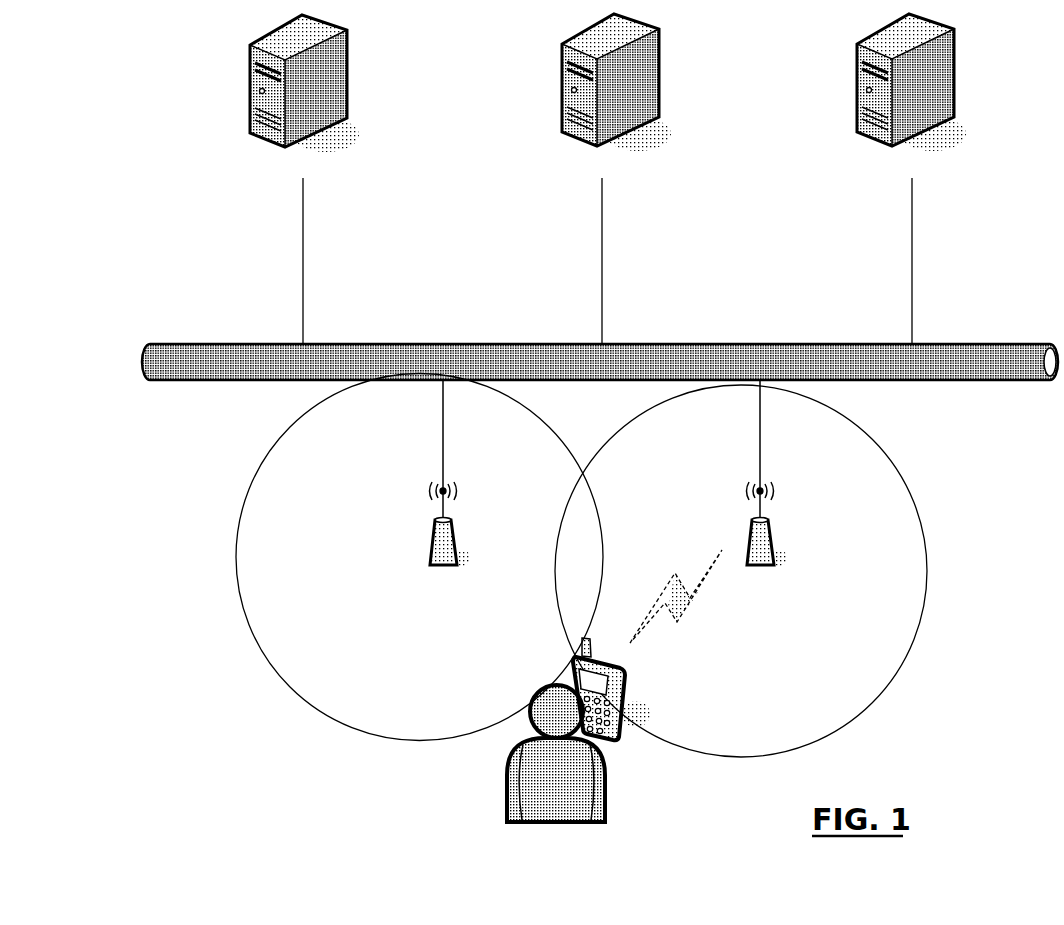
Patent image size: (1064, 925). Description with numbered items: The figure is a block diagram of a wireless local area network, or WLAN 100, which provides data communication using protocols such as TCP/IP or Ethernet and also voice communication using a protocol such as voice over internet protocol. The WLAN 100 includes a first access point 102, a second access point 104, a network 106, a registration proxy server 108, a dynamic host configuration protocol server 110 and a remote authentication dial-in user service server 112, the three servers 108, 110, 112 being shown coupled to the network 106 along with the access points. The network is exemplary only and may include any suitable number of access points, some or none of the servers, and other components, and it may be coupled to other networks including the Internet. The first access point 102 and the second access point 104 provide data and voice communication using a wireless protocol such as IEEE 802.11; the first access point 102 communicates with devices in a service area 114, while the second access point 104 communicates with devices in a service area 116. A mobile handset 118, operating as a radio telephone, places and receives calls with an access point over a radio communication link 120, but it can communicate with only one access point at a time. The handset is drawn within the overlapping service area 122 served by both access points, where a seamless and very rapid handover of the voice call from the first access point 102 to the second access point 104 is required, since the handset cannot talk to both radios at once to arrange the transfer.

The wireless local area network 100 is at (421, 815).
The first access point 102 is at (430, 543).
The second access point 104 is at (772, 547).
The network 106 is at (967, 360).
The registration proxy server 108 is at (277, 52).
The dynamic host configuration protocol server 110 is at (603, 45).
The remote authentication dial-in user service server 112 is at (862, 37).
The service area 114 is at (274, 522).
The service area 116 is at (885, 508).
The mobile handset 118 is at (623, 703).
The radio communication link 120 is at (653, 607).
The service area 122 is at (588, 522).